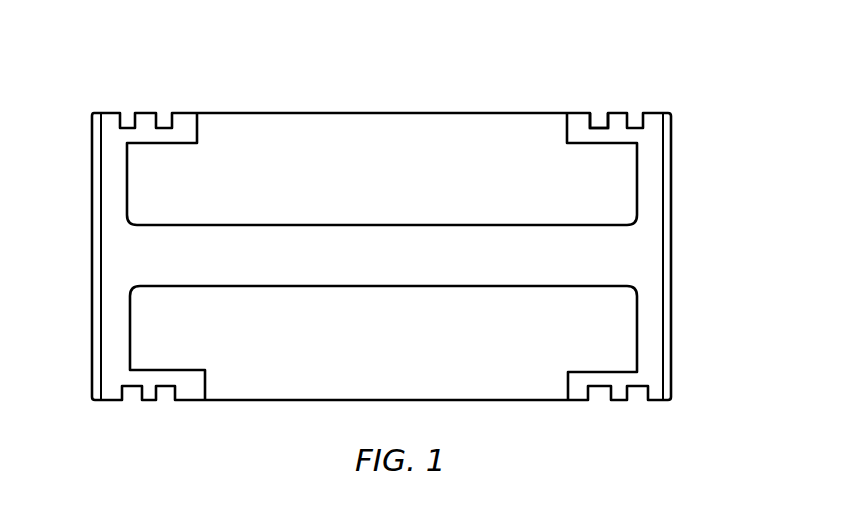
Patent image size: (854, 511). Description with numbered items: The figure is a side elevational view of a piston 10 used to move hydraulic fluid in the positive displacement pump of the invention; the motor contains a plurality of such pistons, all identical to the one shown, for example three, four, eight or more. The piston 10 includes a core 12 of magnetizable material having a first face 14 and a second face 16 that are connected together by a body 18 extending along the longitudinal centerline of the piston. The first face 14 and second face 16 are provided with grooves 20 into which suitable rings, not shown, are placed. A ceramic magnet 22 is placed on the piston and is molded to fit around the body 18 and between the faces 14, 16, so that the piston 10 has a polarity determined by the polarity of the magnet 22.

The piston 10 is at (558, 83).
The core 12 is at (608, 263).
The first face 14 is at (667, 148).
The second face 16 is at (97, 284).
The body 18 is at (495, 237).
The grooves 20 is at (602, 116).
The ceramic magnet 22 is at (420, 173).